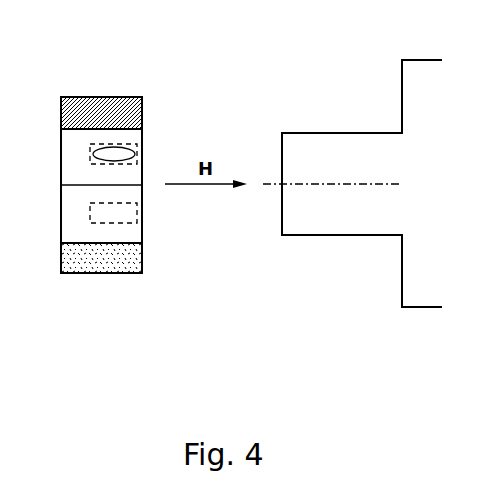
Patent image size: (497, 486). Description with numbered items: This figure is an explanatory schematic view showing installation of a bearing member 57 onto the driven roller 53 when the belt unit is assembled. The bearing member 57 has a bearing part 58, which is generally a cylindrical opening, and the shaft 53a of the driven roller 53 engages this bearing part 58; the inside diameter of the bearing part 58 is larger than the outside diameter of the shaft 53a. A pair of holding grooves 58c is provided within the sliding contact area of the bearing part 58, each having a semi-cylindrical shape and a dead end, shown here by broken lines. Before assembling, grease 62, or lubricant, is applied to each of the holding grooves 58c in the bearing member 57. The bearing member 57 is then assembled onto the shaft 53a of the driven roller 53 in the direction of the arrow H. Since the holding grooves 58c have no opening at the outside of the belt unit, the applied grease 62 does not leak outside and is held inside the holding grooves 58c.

The driven roller 53 is at (415, 60).
The shaft 53a is at (293, 133).
The bearing member 57 is at (82, 97).
The bearing part 58 is at (142, 133).
The holding grooves 58c is at (127, 148).
The grease 62 is at (93, 153).